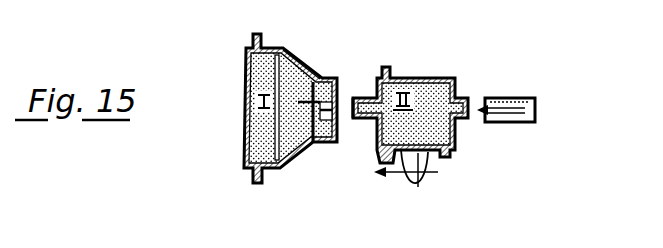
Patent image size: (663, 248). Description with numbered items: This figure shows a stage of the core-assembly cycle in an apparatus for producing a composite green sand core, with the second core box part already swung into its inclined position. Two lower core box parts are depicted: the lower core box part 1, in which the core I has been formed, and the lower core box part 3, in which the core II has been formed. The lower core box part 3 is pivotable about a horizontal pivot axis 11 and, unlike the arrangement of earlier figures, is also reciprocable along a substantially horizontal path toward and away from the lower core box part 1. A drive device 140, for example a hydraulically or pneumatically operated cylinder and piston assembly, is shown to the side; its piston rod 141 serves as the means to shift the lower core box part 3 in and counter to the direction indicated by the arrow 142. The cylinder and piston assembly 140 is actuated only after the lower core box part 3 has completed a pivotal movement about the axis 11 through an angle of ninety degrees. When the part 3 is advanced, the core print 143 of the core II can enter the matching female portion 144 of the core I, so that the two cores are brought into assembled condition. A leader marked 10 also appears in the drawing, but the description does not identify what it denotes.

The lower core box part 1 is at (292, 172).
The lower core box part 3 is at (450, 161).
The cable 10 is at (285, 125).
The pivot axis 11 is at (422, 181).
The drive device 140 is at (525, 102).
The piston rod 141 is at (507, 123).
The arrow 142 is at (398, 175).
The core print 143 is at (363, 99).
The female portion 144 is at (337, 142).